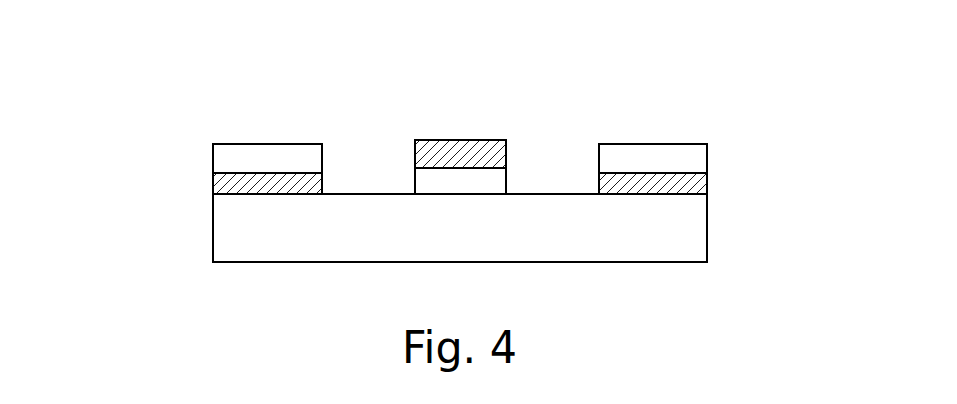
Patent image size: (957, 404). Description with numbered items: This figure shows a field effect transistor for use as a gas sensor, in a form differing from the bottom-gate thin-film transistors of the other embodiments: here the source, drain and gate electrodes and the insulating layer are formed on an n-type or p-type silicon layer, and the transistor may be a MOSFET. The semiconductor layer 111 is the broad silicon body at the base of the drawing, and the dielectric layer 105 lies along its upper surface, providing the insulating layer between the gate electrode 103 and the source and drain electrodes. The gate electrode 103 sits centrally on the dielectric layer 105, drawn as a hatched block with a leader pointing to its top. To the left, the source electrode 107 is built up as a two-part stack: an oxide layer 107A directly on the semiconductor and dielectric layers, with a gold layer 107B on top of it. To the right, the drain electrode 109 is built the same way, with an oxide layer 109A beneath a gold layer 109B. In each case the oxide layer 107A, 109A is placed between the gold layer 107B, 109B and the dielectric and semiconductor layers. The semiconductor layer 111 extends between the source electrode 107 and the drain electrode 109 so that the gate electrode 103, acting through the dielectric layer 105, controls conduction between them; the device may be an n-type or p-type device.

The gate electrode 103 is at (478, 128).
The dielectric layer 105 is at (475, 204).
The source electrode 107 is at (169, 181).
The oxide layer 107A is at (201, 187).
The gold layer 107B is at (201, 153).
The drain electrode 109 is at (758, 181).
The oxide layer 109A is at (721, 188).
The gold layer 109B is at (721, 154).
The semiconductor layer 111 is at (721, 229).